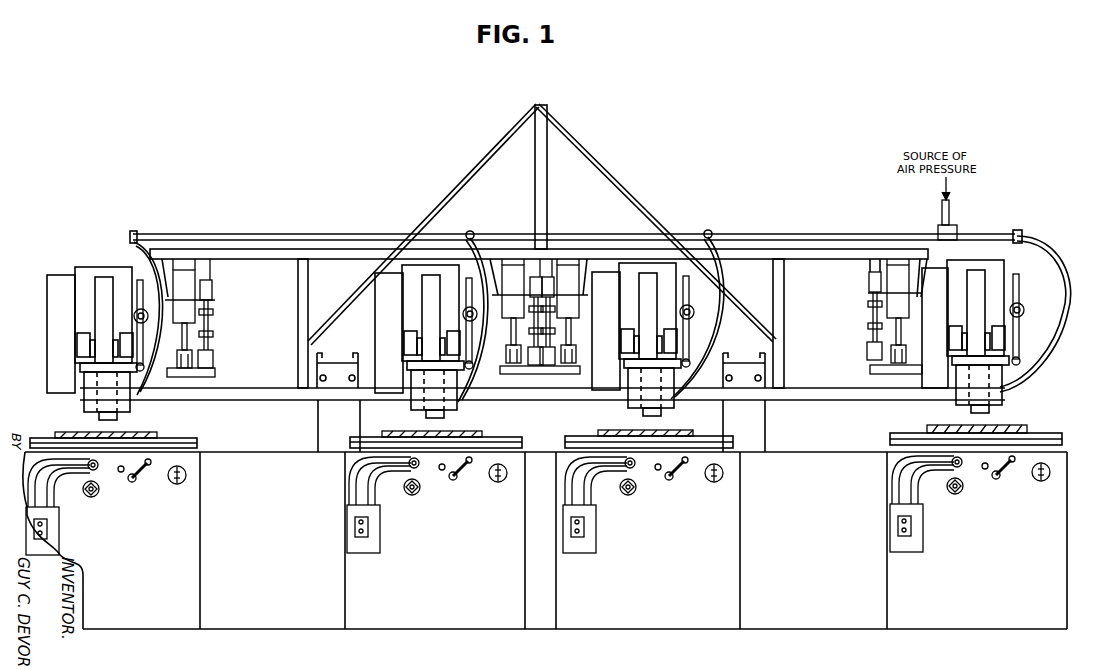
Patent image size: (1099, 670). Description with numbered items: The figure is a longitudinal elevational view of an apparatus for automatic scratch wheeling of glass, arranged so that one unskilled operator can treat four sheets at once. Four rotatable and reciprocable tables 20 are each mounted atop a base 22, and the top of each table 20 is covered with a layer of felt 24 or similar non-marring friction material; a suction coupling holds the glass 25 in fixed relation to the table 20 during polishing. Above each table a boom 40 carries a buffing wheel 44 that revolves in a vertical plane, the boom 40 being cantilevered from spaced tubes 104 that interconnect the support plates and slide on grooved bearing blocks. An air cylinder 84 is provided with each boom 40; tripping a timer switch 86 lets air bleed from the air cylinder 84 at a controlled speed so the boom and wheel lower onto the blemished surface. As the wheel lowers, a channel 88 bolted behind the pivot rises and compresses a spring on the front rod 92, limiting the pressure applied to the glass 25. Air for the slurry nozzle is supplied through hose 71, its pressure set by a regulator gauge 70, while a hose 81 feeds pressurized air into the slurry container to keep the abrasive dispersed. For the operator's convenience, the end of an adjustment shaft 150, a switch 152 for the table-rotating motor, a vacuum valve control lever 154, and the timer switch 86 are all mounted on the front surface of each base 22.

The rotatable and reciprocable table 20 is at (197, 442).
The base 22 is at (195, 600).
The layer of felt 24 is at (40, 430).
The glass 25 is at (47, 432).
The boom 40 is at (84, 362).
The buffing wheel 44 is at (78, 313).
The regulator gauge 70 is at (1022, 309).
The hose 71 is at (1021, 327).
The hose 81 is at (130, 237).
The air cylinder 84 is at (190, 277).
The timer switch 86 is at (186, 475).
The channel 88 is at (215, 373).
The front rod 92 is at (212, 318).
The spaced tubes 104 is at (235, 395).
The adjustment shaft 150 is at (96, 495).
The switch 152 is at (55, 527).
The vacuum valve control lever 154 is at (138, 482).